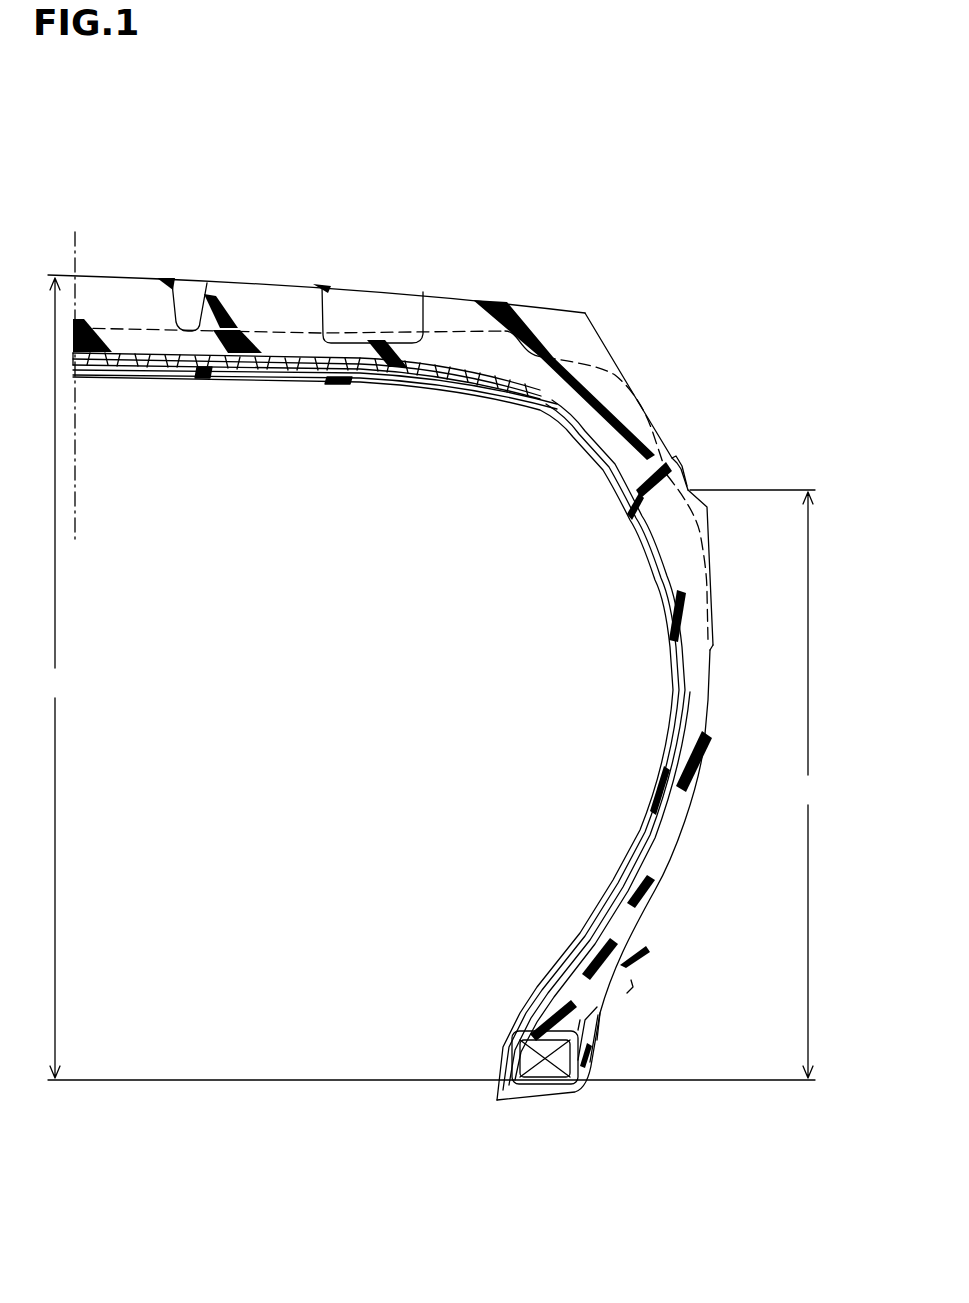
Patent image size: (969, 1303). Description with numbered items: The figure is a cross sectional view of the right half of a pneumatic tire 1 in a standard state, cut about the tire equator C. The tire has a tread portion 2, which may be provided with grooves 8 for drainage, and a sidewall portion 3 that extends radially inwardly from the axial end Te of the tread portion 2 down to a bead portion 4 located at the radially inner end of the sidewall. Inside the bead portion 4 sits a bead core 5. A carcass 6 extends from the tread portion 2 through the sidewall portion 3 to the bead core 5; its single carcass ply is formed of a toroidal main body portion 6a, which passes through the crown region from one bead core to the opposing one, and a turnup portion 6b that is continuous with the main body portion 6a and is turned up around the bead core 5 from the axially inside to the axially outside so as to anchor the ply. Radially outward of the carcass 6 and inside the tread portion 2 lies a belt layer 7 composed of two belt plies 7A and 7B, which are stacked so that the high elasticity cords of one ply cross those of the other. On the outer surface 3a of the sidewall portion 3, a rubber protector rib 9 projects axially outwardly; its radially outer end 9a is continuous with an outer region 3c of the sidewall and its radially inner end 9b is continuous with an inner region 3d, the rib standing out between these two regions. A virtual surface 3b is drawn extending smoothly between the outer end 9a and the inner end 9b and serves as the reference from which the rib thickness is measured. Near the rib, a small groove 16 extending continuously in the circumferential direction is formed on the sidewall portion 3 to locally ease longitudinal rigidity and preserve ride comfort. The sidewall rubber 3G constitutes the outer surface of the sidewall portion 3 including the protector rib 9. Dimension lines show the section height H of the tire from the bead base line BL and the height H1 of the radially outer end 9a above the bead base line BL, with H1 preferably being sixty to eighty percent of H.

The pneumatic tire 1 is at (577, 238).
The tread portion 2 is at (472, 279).
The sidewall portion 3 is at (723, 740).
The outer surface 3a is at (612, 350).
The virtual surface 3b is at (693, 560).
The outer region 3c is at (637, 390).
The inner region 3d is at (705, 773).
The sidewall rubber 3G is at (677, 837).
The bead portion 4 is at (619, 1058).
The bead core 5 is at (527, 1057).
The carcass 6 is at (498, 705).
The main body portion 6a is at (680, 730).
The turnup portion 6b is at (680, 770).
The belt layer 7 is at (148, 498).
The belt ply 7A is at (175, 362).
The belt ply 7B is at (260, 358).
The groove 8 is at (187, 300).
The protector rib 9 is at (703, 522).
The radially outer end 9a is at (690, 490).
The radially inner end 9b is at (713, 645).
The small groove 16 is at (688, 490).
The axial end of the tread portion Te is at (585, 313).
The tire equator C is at (75, 370).
The section height H is at (54, 678).
The height of the radially outer end of the protector rib H1 is at (758, 784).
The bead base line BL is at (271, 1082).